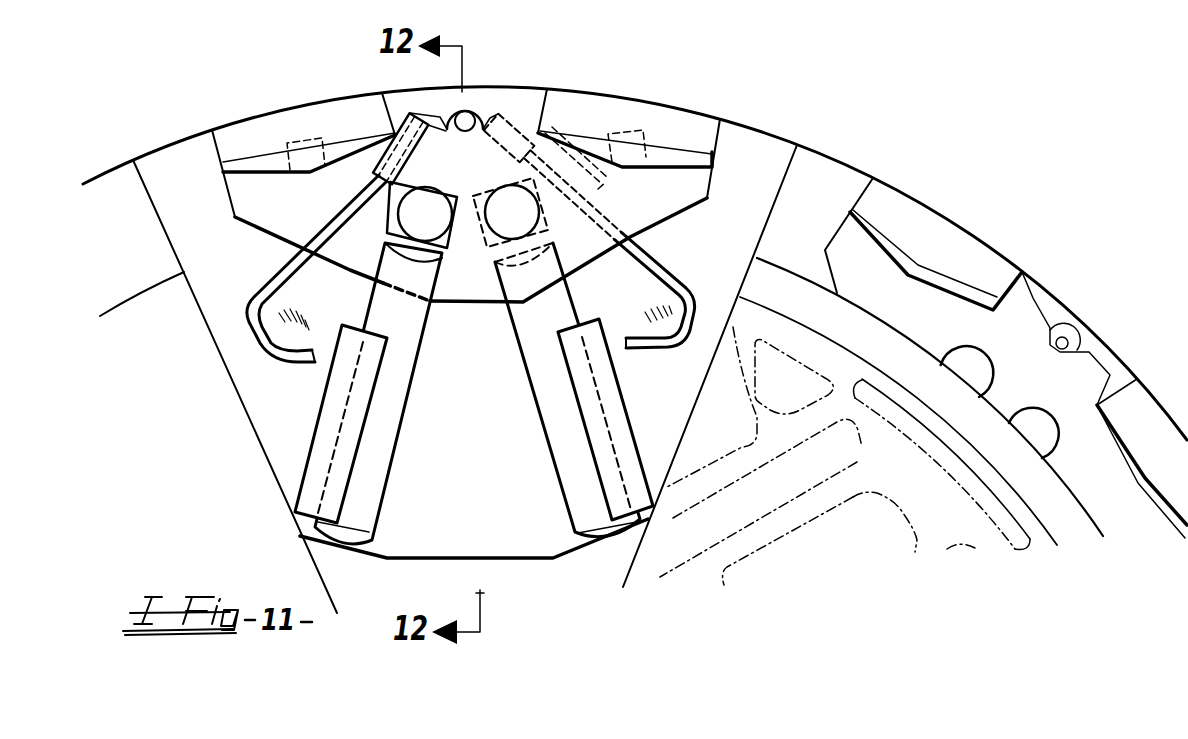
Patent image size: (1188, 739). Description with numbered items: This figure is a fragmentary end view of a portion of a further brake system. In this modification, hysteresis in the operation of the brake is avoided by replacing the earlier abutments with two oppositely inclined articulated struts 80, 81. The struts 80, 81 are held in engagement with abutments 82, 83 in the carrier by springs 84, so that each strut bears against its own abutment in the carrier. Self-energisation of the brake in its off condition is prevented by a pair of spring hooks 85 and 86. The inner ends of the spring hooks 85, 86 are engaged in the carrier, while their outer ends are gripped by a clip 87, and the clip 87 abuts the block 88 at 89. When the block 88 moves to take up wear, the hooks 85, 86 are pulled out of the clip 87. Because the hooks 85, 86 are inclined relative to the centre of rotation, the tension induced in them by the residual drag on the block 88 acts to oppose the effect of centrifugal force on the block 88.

The articulated strut 80 is at (372, 475).
The articulated strut 81 is at (565, 458).
The abutment 82 is at (393, 560).
The abutment 83 is at (625, 555).
The spring 84 is at (337, 393).
The spring hook 85 is at (325, 233).
The spring hook 86 is at (672, 283).
The clip 87 is at (447, 121).
The block 88 is at (575, 167).
The abutment point of clip on block 89 is at (483, 117).